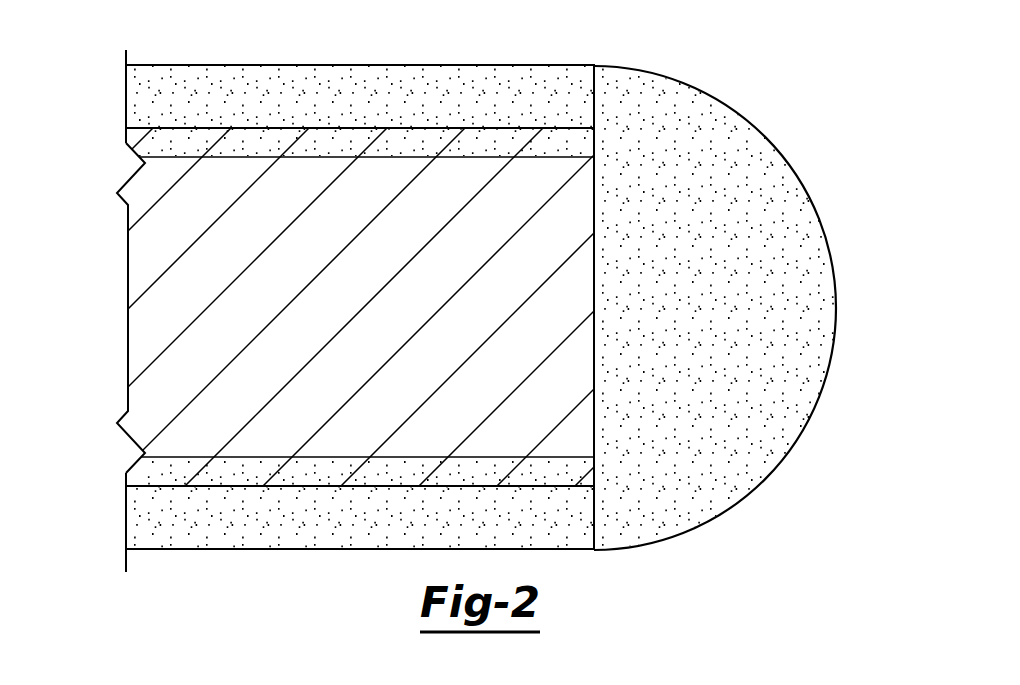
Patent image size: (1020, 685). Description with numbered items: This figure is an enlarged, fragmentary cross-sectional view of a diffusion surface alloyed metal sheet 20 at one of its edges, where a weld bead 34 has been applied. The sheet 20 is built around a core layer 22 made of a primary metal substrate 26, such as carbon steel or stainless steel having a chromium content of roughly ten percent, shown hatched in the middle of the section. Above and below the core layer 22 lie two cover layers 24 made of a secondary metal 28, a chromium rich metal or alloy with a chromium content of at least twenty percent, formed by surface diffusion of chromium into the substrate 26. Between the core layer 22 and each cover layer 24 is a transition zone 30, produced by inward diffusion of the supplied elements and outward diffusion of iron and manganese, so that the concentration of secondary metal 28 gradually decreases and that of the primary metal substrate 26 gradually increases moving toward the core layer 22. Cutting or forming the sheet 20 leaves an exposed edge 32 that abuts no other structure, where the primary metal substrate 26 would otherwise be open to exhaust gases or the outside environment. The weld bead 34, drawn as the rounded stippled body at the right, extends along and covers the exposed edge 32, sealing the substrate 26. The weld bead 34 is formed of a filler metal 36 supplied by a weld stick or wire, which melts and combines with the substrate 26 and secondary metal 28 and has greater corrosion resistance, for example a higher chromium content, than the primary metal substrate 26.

The diffusion surface alloyed metal sheet 20 is at (188, 50).
The core layer 22 is at (126, 303).
The cover layers 24 is at (126, 88).
The primary metal substrate 26 is at (183, 357).
The secondary metal 28 is at (447, 87).
The transition zones 30 is at (123, 144).
The exposed edge 32 is at (594, 282).
The weld bead 34 is at (768, 477).
The filler metal 36 is at (752, 170).